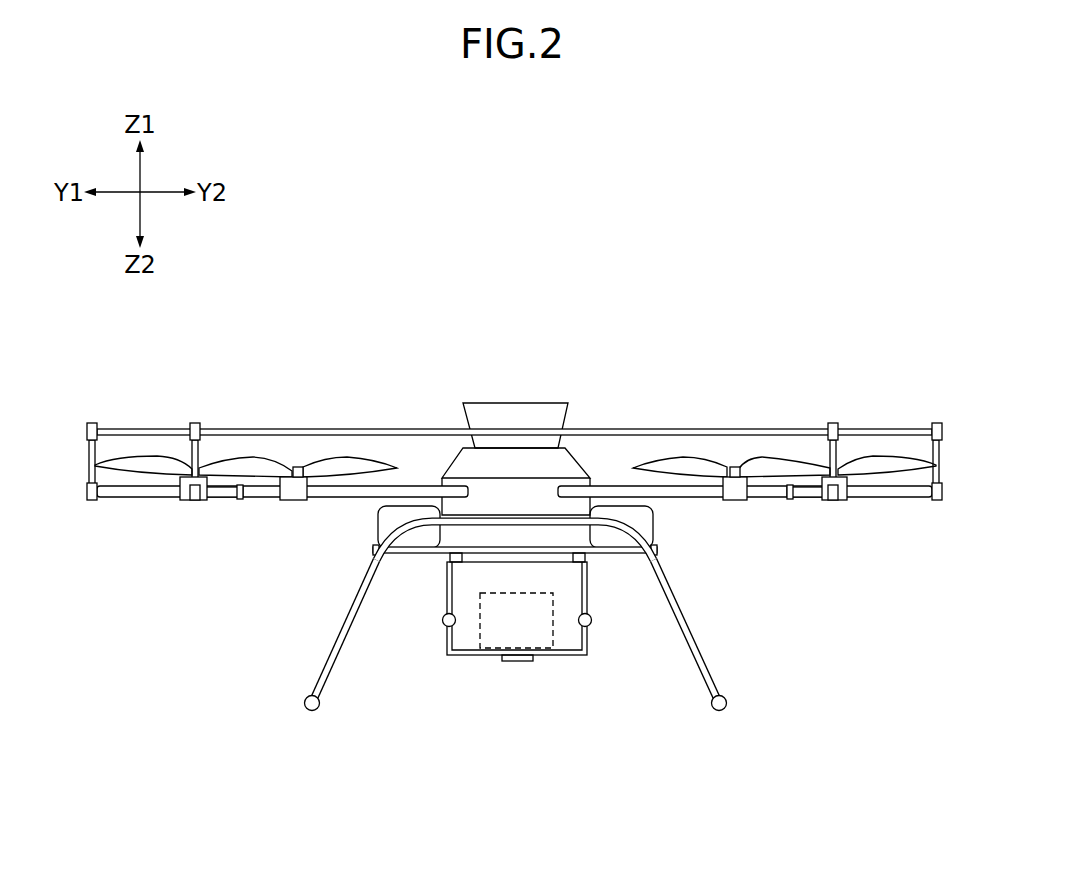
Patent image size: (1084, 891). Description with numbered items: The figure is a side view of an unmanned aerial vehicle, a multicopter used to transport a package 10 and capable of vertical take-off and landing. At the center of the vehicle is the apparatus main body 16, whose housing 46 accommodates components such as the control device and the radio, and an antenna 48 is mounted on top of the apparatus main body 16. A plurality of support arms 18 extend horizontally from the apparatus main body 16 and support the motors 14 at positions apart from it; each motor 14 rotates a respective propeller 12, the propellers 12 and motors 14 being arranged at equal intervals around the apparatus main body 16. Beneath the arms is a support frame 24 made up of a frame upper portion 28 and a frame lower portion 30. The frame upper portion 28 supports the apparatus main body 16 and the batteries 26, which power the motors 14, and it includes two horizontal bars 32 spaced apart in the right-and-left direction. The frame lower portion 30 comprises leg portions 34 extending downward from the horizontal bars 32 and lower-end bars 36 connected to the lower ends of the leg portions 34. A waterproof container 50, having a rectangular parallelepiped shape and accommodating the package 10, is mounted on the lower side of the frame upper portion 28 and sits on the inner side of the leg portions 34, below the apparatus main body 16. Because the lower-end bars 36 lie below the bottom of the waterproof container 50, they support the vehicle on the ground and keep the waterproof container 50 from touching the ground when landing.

The package 10 is at (488, 650).
The propellers 12 is at (155, 462).
The motors 14 is at (298, 476).
The apparatus main body 16 is at (455, 443).
The support arms 18 is at (290, 494).
The support frame 24 is at (478, 656).
The batteries 26 is at (388, 523).
The frame upper portion 28 is at (608, 556).
The frame lower portion 30 is at (474, 674).
The horizontal bars 32 is at (453, 522).
The leg portions 34 is at (333, 640).
The lower-end bars 36 is at (501, 739).
The housing 46 is at (442, 470).
The antenna 48 is at (548, 404).
The waterproof container 50 is at (438, 642).